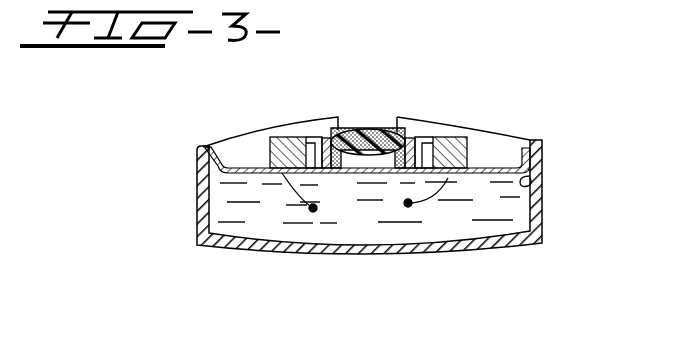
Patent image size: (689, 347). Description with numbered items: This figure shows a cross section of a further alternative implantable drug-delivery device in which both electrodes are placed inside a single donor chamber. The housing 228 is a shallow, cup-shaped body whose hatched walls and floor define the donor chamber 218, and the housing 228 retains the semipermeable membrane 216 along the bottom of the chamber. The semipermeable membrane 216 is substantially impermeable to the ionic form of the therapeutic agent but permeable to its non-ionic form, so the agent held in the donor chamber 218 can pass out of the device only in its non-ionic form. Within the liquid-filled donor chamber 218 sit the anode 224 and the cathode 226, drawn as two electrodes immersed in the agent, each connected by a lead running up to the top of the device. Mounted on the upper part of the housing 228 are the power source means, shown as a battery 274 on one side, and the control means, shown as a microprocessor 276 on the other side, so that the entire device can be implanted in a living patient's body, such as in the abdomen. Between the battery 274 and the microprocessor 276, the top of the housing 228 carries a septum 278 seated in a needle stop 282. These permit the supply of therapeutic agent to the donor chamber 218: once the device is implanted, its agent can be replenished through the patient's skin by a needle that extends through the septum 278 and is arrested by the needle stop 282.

The semipermeable membrane 216 is at (363, 253).
The donor chamber 218 is at (532, 180).
The anode 224 is at (313, 208).
The cathode 226 is at (408, 203).
The housing 228 is at (200, 183).
The battery 274 is at (288, 175).
The microprocessor 276 is at (450, 140).
The septum 278 is at (372, 128).
The needle stop 282 is at (356, 126).